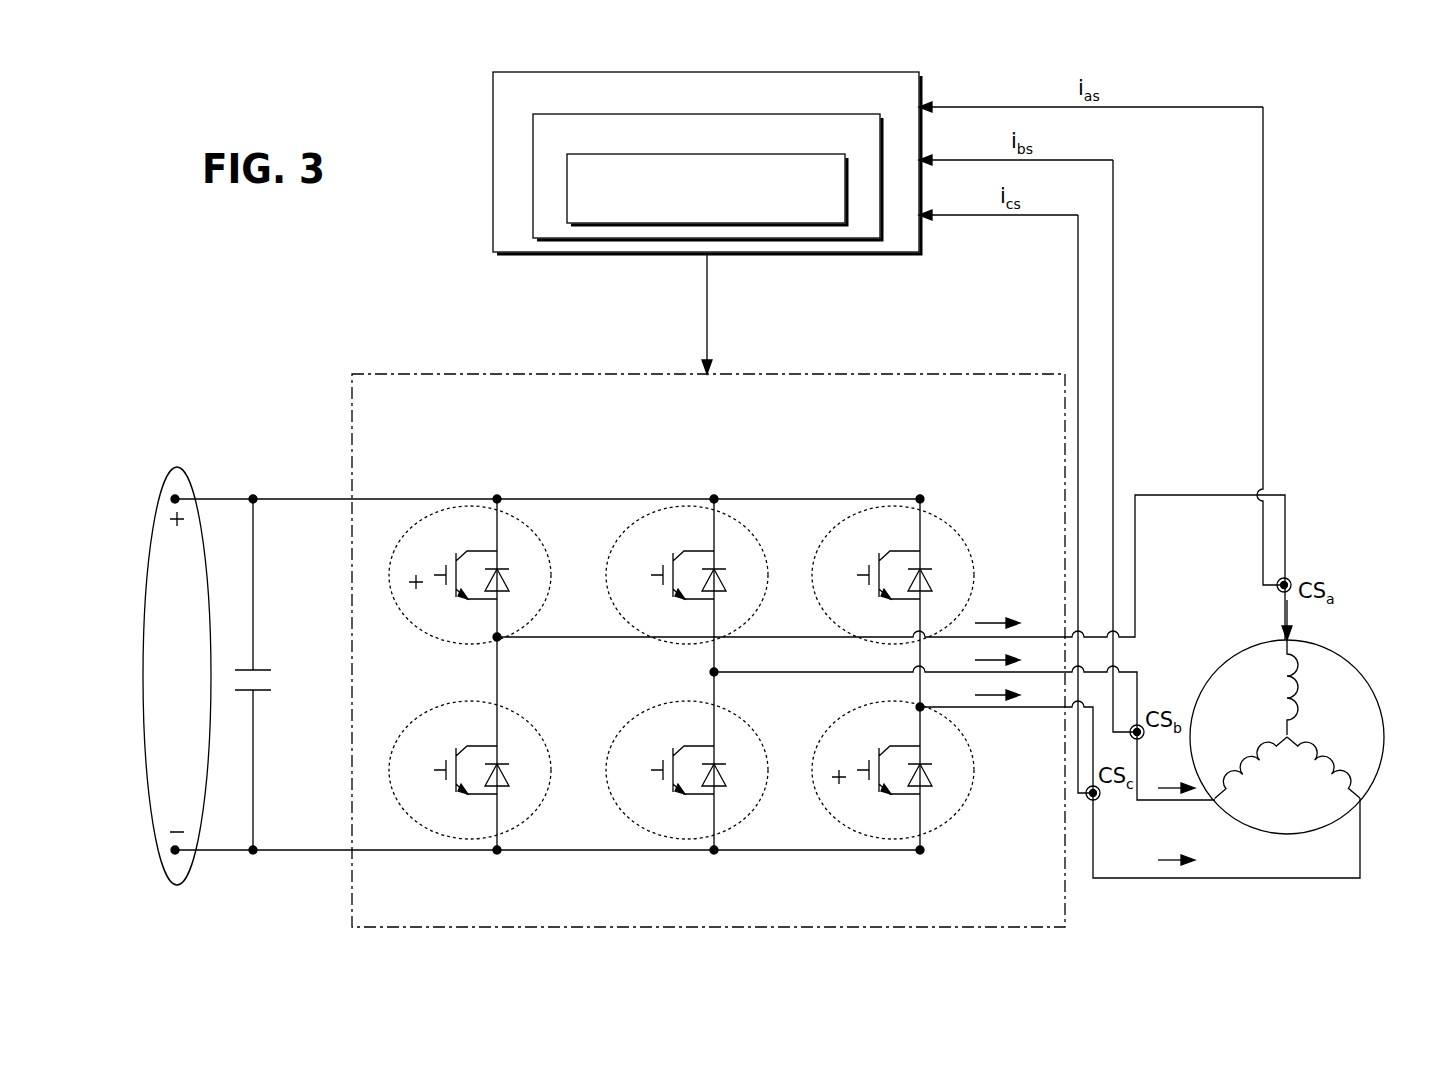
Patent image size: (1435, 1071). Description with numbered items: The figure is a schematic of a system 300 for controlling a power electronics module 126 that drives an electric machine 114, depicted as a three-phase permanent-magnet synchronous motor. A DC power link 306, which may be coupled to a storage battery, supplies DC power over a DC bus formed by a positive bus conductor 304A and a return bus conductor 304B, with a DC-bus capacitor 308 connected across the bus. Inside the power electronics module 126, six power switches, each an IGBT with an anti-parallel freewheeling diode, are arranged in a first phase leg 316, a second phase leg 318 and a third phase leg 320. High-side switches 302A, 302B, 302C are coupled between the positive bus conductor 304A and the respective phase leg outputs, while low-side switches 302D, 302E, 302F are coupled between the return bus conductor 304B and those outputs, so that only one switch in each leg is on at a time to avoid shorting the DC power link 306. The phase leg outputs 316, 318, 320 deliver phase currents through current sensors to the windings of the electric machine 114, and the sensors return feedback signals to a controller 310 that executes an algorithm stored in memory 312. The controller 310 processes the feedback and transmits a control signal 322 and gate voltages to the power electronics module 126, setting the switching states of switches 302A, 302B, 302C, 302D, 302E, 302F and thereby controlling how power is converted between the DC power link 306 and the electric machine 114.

The system 300 is at (1022, 58).
The controller 310 is at (705, 72).
The memory 312 is at (870, 113).
The control signal 322 is at (695, 322).
The power electronics module 126 is at (548, 374).
The DC power link 306 is at (178, 467).
The positive bus conductor 304A is at (318, 485).
The return bus conductor 304B is at (318, 864).
The DC-bus capacitor 308 is at (262, 692).
The high-side switch 302A is at (478, 506).
The high-side switch 302B is at (695, 506).
The high-side switch 302C is at (902, 506).
The low-side switch 302D is at (468, 842).
The low-side switch 302E is at (684, 842).
The low-side switch 302F is at (888, 842).
The first phase leg 316 is at (492, 641).
The second phase leg 318 is at (710, 674).
The third phase leg 320 is at (916, 706).
The electric machine 114 is at (1352, 668).